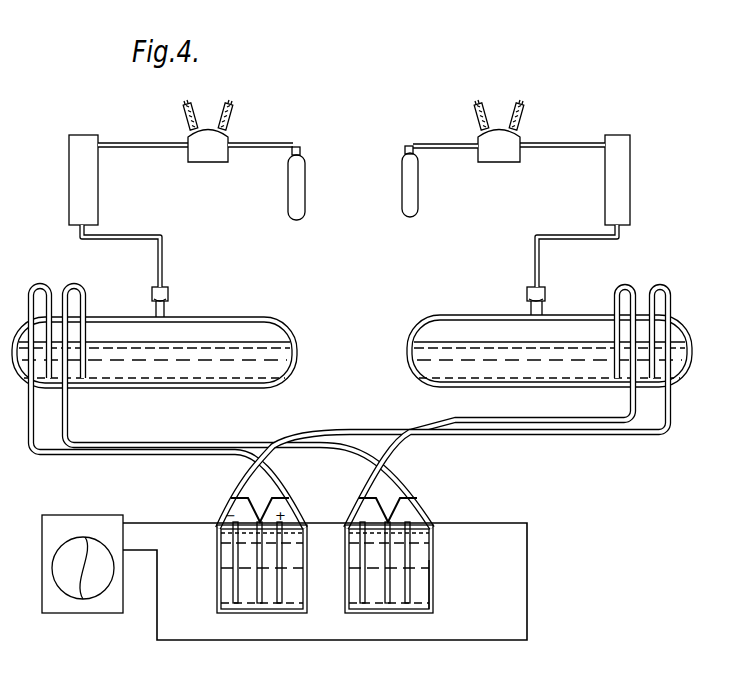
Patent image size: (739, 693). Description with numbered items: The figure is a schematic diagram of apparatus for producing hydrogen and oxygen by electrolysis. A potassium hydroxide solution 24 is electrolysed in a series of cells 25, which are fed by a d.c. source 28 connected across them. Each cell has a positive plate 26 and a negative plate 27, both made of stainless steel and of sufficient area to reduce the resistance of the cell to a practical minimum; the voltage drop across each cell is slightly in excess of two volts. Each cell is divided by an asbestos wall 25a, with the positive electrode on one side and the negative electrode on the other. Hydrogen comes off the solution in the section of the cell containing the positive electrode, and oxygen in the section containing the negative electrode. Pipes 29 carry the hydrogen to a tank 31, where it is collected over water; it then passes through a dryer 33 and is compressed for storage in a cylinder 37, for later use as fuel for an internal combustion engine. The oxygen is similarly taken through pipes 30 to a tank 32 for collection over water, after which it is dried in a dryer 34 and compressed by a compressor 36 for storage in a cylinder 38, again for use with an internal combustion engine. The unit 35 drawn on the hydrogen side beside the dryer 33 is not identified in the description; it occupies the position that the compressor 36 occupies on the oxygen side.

The potassium hydroxide solution 24 is at (427, 588).
The cells 25 is at (422, 612).
The asbestos wall 25a is at (397, 600).
The positive plate 26 is at (427, 558).
The negative plate 27 is at (363, 580).
The d.c. source 28 is at (88, 614).
The pipes 29 is at (568, 425).
The pipes 30 is at (189, 450).
The tank 31 is at (485, 310).
The tank 32 is at (238, 310).
The dryer 33 is at (620, 152).
The dryer 34 is at (78, 157).
The valve unit 35 is at (513, 137).
The compressor 36 is at (217, 142).
The cylinder 37 is at (404, 194).
The cylinder 38 is at (298, 178).